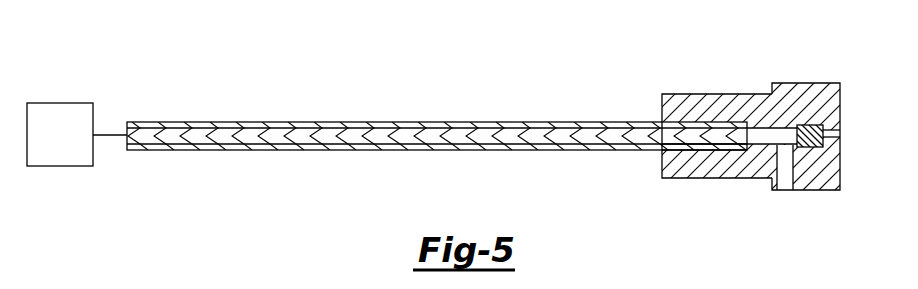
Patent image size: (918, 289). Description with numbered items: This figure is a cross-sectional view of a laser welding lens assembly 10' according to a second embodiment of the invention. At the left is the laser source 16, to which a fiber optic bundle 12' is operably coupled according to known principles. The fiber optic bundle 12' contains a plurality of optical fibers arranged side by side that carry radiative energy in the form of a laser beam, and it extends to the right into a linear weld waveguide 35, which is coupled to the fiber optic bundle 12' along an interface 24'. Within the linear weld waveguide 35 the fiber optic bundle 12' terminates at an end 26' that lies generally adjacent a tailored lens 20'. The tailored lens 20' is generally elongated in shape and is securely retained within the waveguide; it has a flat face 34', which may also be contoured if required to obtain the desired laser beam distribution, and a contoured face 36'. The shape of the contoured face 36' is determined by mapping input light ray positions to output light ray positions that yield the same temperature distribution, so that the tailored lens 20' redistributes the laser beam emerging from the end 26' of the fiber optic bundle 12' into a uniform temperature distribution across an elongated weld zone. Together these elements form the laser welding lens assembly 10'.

The laser welding lens assembly 10' is at (472, 132).
The fiber optic bundle 12' is at (437, 113).
The laser source 16 is at (57, 103).
The tailored lens 20' is at (807, 157).
The interface 24' is at (704, 183).
The end 26' is at (748, 98).
The flat face 34' is at (790, 190).
The linear weld waveguide 35 is at (731, 94).
The contoured face 36' is at (838, 132).